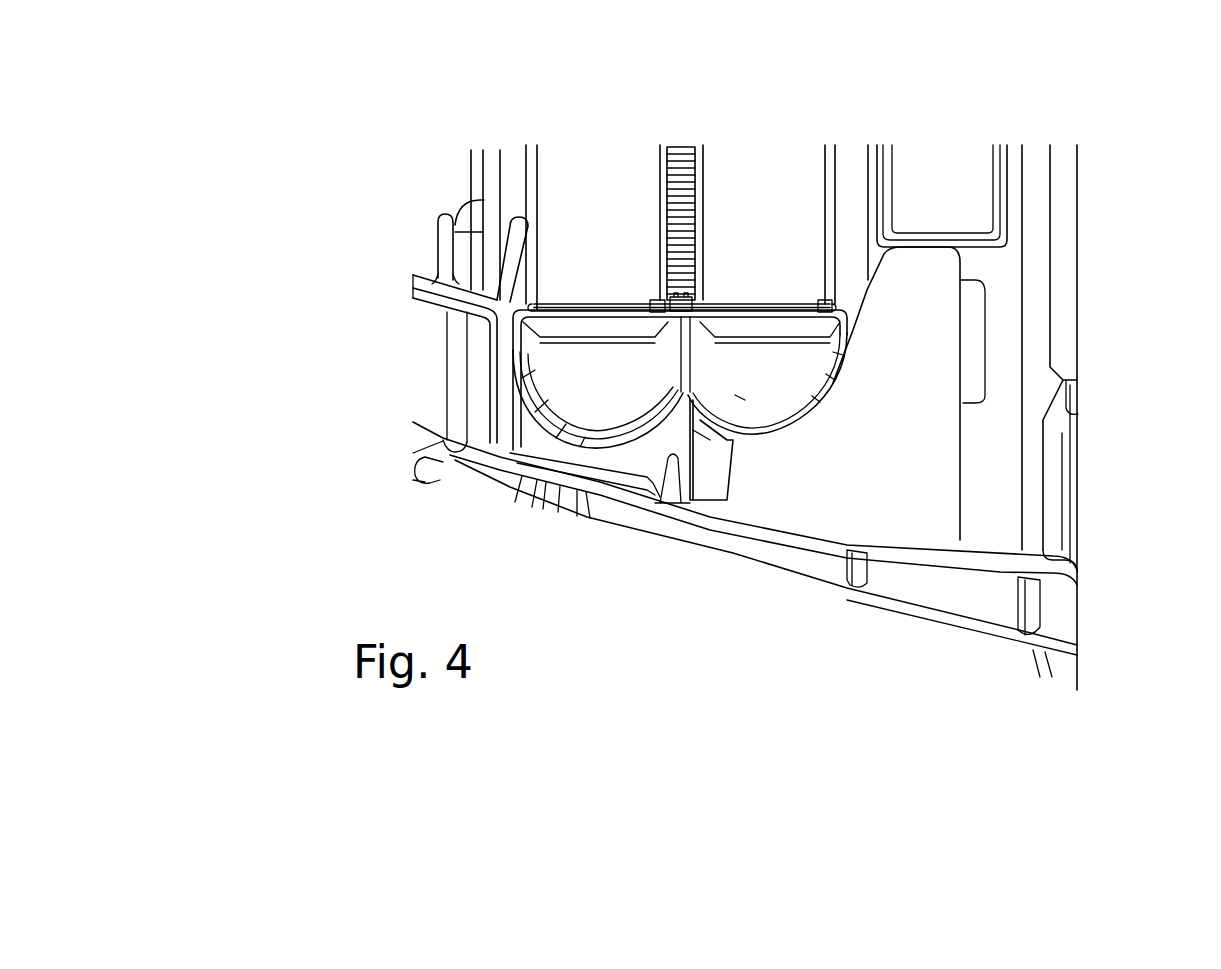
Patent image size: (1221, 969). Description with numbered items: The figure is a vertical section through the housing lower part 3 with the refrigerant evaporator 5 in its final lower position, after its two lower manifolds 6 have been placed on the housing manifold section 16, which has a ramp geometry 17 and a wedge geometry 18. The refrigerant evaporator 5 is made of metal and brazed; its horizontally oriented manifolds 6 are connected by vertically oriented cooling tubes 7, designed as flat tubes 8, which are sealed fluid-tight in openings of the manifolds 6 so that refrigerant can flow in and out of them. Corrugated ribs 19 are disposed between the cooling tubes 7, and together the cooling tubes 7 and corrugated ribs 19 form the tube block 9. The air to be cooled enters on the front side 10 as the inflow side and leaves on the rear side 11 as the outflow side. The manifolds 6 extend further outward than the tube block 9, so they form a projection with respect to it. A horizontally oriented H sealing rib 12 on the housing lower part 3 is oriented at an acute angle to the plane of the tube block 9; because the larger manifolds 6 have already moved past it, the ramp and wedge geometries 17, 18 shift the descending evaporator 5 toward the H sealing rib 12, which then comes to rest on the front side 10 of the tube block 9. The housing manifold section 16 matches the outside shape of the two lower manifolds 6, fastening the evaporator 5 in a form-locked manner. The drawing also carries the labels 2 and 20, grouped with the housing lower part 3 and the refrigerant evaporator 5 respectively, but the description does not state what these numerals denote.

The vehicle body 2 is at (1014, 417).
The housing lower part 3 is at (990, 500).
The refrigerant evaporator 5 is at (516, 165).
The manifolds 6 is at (613, 355).
The cooling tubes 7 is at (635, 178).
The flat tubes 8 is at (635, 178).
The tube block 9 is at (641, 182).
The front side 10 is at (528, 158).
The rear side 11 is at (840, 181).
The H sealing rib 12 is at (520, 239).
The housing manifold section 16 is at (861, 542).
The ramp geometry 17 is at (861, 542).
The wedge geometry 18 is at (710, 440).
The corrugated ribs 19 is at (667, 180).
The fastening device 20 is at (577, 133).